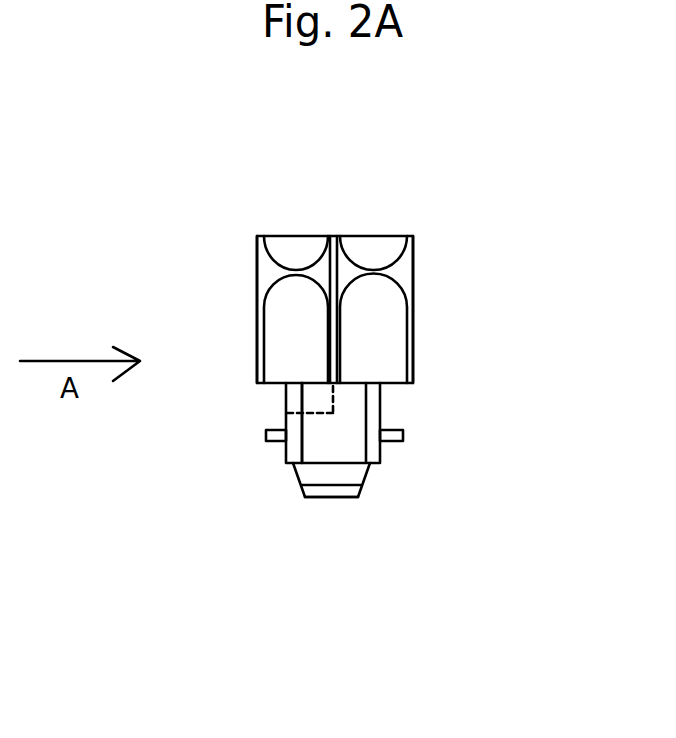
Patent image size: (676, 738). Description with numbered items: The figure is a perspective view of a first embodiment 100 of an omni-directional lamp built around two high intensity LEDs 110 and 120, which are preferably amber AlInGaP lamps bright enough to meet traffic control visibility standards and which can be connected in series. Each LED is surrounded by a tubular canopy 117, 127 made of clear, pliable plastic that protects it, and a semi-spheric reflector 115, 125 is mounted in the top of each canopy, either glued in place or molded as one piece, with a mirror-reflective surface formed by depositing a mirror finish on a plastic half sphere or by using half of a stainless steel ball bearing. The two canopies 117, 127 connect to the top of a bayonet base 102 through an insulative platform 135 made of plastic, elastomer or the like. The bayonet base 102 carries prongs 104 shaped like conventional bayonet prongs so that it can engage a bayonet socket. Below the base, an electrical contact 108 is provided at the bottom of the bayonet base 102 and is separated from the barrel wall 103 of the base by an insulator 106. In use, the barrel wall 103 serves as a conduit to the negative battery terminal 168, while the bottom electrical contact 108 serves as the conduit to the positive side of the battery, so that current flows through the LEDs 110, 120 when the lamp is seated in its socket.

The first embodiment 100 is at (215, 175).
The bayonet base 102 is at (327, 435).
The barrel wall 103 is at (385, 413).
The prongs 104 is at (266, 433).
The insulator 106 is at (362, 476).
The electrical contact 108 is at (333, 497).
The LED 110 is at (280, 310).
The semi-spheric reflector 115 is at (297, 253).
The tubular canopy 117 is at (257, 255).
The LED 120 is at (383, 335).
The semi-spheric reflector 125 is at (383, 248).
The tubular canopy 127 is at (415, 278).
The insulative platform 135 is at (413, 385).
The negative battery terminal 168 is at (318, 413).